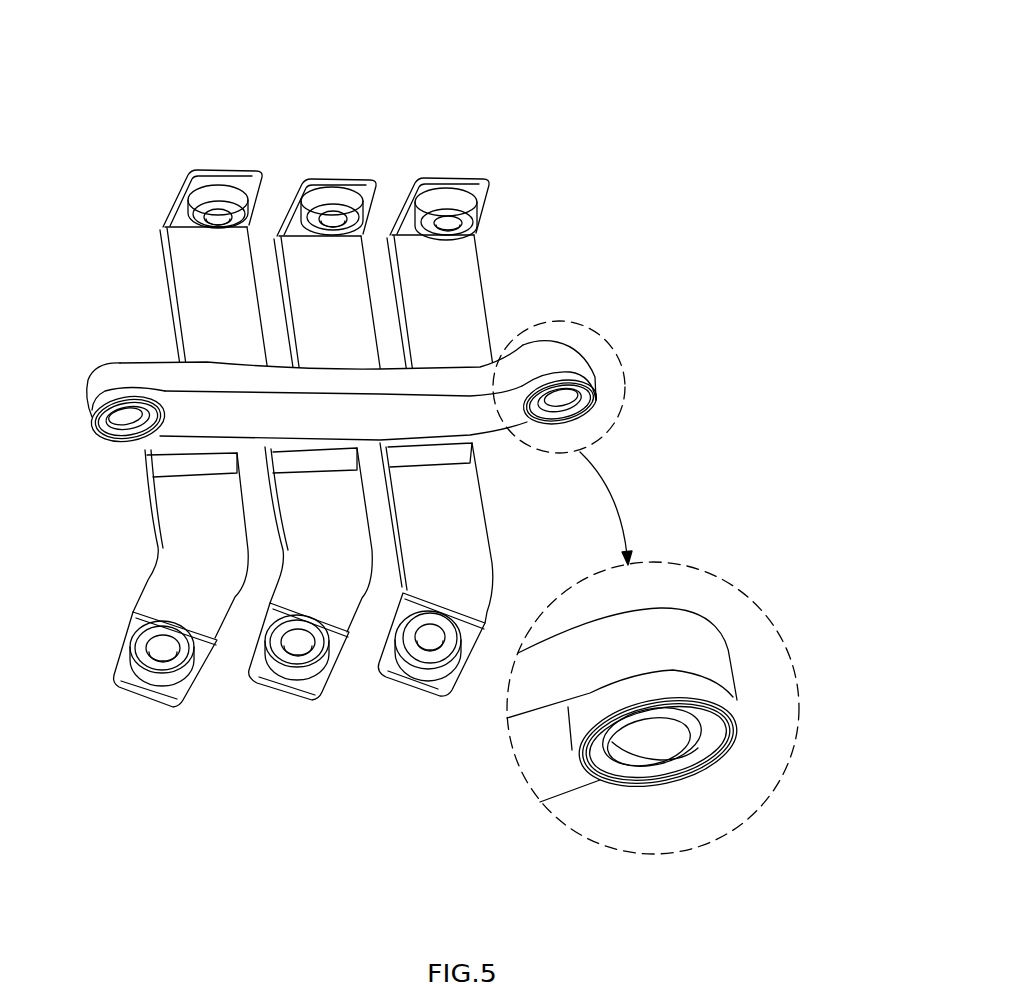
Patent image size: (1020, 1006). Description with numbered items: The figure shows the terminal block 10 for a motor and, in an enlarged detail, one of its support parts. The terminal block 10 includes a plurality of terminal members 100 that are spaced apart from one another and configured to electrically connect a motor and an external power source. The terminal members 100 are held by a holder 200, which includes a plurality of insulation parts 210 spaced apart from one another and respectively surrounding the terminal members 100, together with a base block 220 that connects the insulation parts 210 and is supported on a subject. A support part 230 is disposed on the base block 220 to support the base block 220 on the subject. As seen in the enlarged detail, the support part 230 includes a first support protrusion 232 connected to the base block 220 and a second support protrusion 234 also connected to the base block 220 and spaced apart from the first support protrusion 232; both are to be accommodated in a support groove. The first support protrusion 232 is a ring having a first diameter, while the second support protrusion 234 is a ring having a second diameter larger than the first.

The terminal block 10 is at (149, 163).
The terminal member 100 is at (232, 161).
The holder 200 is at (80, 278).
The insulation part 210 is at (186, 284).
The base block 220 is at (190, 405).
The support part 230 is at (852, 615).
The first support protrusion 232 is at (713, 724).
The second support protrusion 234 is at (677, 700).